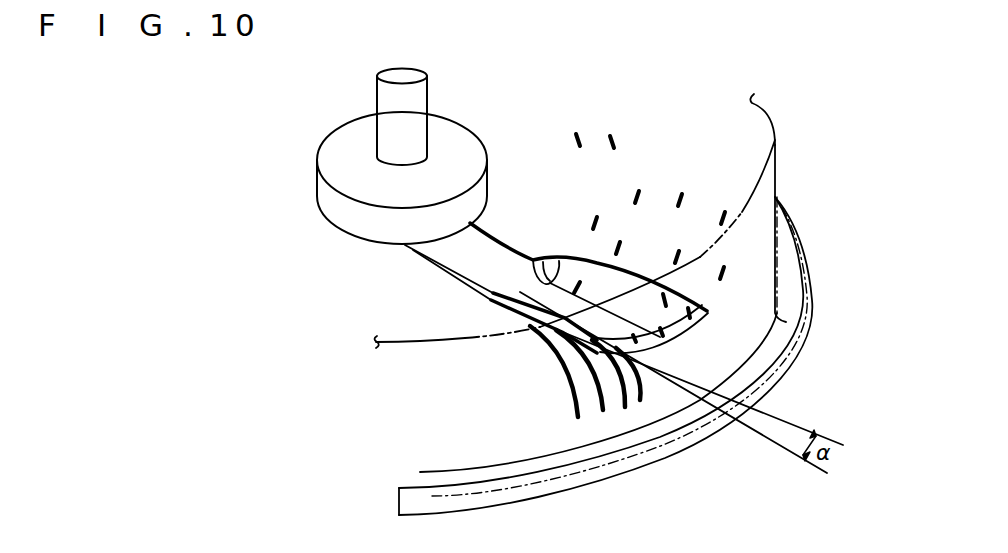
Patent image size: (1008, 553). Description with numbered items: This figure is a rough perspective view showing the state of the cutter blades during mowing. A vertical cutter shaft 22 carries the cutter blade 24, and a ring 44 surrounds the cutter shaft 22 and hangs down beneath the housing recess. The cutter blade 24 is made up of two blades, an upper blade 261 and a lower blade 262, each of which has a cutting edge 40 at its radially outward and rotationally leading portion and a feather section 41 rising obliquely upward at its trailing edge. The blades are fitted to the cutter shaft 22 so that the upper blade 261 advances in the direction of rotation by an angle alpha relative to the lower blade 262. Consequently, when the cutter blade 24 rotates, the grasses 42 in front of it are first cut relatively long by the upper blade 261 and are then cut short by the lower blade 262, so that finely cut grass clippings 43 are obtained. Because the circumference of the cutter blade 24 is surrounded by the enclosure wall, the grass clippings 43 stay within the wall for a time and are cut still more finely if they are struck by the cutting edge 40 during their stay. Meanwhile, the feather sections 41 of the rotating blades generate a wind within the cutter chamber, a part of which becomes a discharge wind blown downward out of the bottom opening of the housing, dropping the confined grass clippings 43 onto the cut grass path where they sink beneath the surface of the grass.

The cutter shaft 22 is at (420, 97).
The ring 44 is at (320, 200).
The cutter blade 24 is at (525, 234).
The upper blade 261 is at (420, 262).
The lower blade 262 is at (678, 352).
The cutting edge 40 is at (517, 307).
The feather section 41 is at (600, 267).
The grasses 42 is at (592, 382).
The grass clippings 43 is at (637, 195).